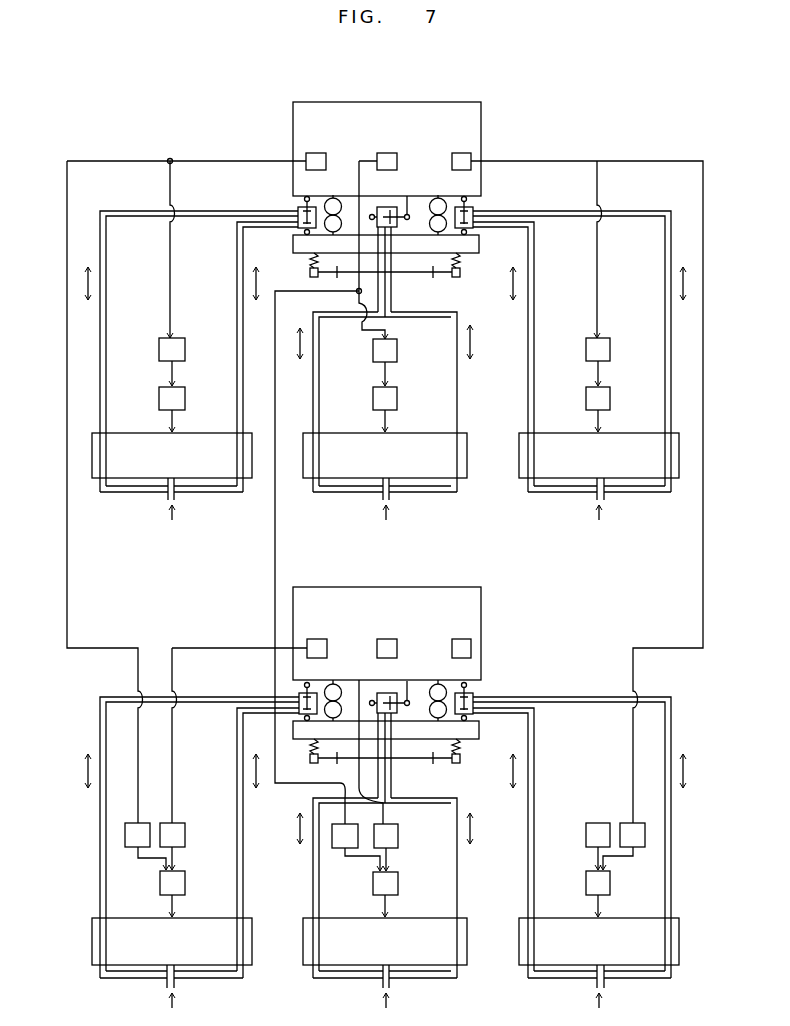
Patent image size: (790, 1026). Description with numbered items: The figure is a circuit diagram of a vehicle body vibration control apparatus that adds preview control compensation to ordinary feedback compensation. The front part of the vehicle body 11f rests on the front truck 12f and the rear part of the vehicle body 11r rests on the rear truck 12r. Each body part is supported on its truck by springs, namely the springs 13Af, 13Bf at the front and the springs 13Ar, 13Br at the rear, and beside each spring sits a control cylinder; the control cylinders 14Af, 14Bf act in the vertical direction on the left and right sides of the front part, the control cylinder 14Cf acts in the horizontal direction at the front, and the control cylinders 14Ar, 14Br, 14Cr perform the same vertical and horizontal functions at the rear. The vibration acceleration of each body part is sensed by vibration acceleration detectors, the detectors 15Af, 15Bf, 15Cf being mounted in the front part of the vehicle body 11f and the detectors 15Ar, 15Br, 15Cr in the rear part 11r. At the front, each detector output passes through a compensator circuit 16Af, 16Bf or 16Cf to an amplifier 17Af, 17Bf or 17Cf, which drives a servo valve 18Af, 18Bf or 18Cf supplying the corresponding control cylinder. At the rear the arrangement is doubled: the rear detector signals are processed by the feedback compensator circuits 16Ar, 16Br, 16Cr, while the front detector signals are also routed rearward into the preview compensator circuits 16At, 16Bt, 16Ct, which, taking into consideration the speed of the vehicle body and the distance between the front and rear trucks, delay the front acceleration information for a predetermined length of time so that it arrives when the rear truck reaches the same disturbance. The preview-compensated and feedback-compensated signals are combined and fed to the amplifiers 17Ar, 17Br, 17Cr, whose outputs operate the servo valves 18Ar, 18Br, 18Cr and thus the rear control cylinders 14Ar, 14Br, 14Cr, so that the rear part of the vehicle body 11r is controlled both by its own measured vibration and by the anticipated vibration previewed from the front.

The front part of the vehicle body 11f is at (481, 105).
The rear part of the vehicle body 11r is at (481, 591).
The front truck 12f is at (479, 245).
The rear truck 12r is at (479, 733).
The spring 13Af is at (340, 195).
The spring 13Bf is at (442, 196).
The spring 13Ar is at (340, 682).
The spring 13Br is at (442, 682).
The control cylinder 14Af is at (298, 212).
The control cylinder 14Bf is at (473, 212).
The control cylinder 14Cf is at (392, 207).
The control cylinder 14Ar is at (299, 698).
The control cylinder 14Br is at (473, 698).
The control cylinder 14Cr is at (392, 693).
The vibration acceleration detector 15Af is at (314, 153).
The vibration acceleration detector 15Bf is at (462, 153).
The vibration acceleration detector 15Cf is at (389, 153).
The vibration acceleration detector 15Ar is at (314, 639).
The vibration acceleration detector 15Br is at (462, 639).
The vibration acceleration detector 15Cr is at (389, 639).
The compensator circuit 16Af is at (177, 343).
The compensator circuit 16Bf is at (605, 343).
The compensator circuit 16Cf is at (392, 351).
The feedback compensator circuit 16Ar is at (177, 828).
The feedback compensator circuit 16Br is at (595, 826).
The feedback compensator circuit 16Cr is at (404, 821).
The preview compensator circuit 16At is at (125, 837).
The preview compensator circuit 16Bt is at (645, 838).
The preview compensator circuit 16Ct is at (332, 836).
The amplifier 17Af is at (177, 392).
The amplifier 17Bf is at (605, 392).
The amplifier 17Cf is at (392, 399).
The amplifier 17Ar is at (177, 882).
The amplifier 17Br is at (601, 882).
The amplifier 17Cr is at (391, 884).
The servo valve 18Af is at (202, 472).
The servo valve 18Bf is at (620, 473).
The servo valve 18Cf is at (405, 473).
The servo valve 18Ar is at (215, 956).
The servo valve 18Br is at (644, 956).
The servo valve 18Cr is at (432, 956).